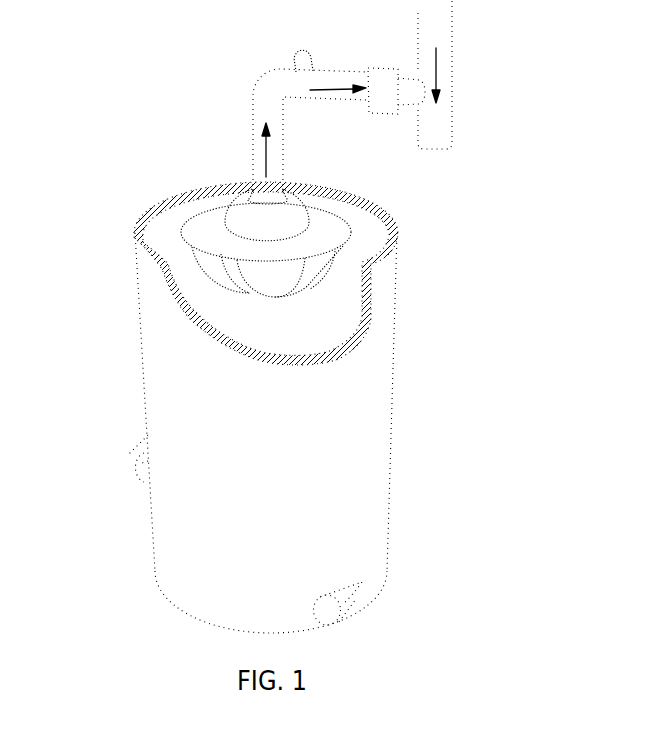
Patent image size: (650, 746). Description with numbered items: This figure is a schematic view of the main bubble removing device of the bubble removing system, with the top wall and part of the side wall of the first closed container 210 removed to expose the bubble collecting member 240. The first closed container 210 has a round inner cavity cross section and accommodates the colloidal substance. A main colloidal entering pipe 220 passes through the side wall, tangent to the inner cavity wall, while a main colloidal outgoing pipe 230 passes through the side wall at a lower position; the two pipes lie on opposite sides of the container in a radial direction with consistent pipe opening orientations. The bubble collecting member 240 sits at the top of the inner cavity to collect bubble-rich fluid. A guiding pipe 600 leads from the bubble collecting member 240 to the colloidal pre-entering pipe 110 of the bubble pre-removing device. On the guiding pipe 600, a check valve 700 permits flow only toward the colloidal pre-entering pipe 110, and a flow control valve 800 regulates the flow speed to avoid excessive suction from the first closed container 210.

The colloidal pre-entering pipe 110 is at (445, 68).
The first closed container 210 is at (367, 405).
The main colloidal entering pipe 220 is at (142, 461).
The main colloidal outgoing pipe 230 is at (340, 595).
The bubble collecting member 240 is at (327, 222).
The guiding pipe 600 is at (259, 82).
The check valve 700 is at (376, 104).
The flow control valve 800 is at (312, 58).